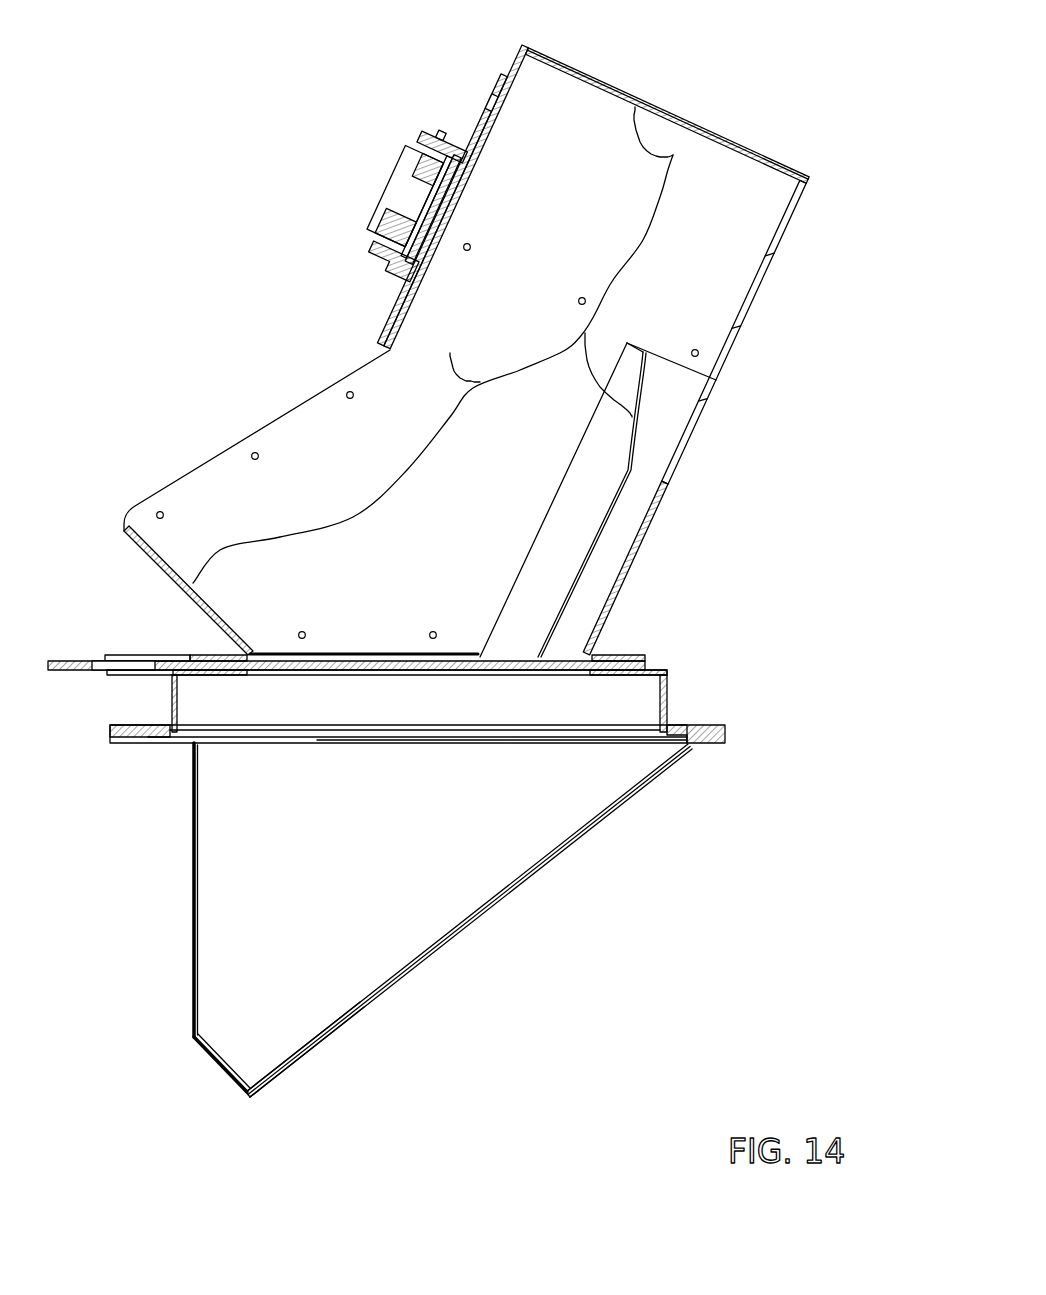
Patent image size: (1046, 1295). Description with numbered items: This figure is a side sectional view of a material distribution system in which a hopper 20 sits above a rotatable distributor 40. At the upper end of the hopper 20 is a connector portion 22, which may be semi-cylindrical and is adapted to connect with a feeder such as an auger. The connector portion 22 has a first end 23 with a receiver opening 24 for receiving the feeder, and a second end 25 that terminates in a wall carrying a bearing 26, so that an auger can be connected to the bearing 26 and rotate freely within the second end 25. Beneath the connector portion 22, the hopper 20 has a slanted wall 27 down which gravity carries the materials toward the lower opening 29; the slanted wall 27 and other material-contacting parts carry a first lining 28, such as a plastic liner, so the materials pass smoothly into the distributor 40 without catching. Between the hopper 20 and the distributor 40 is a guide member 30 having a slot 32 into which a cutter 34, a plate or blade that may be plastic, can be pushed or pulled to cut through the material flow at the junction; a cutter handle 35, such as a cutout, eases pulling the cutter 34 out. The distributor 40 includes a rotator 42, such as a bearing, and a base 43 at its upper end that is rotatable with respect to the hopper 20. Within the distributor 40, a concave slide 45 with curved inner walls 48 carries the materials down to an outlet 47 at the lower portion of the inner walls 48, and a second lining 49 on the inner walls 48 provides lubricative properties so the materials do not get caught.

The hopper 20 is at (613, 84).
The connector portion 22 is at (480, 112).
The first end 23 is at (640, 560).
The receiver opening 24 is at (745, 320).
The second end 25 is at (387, 312).
The bearing 26 is at (385, 205).
The slanted wall 27 is at (563, 522).
The first lining 28 is at (680, 155).
The lower opening 29 is at (243, 1032).
The guide member 30 is at (620, 653).
The slot 32 is at (123, 652).
The cutter 34 is at (298, 675).
The cutter handle 35 is at (59, 660).
The distributor 40 is at (469, 939).
The rotator 42 is at (667, 703).
The base 43 is at (711, 748).
The slide 45 is at (466, 880).
The outlet 47 is at (227, 1073).
The inner walls 48 is at (308, 1051).
The second lining 49 is at (351, 1009).